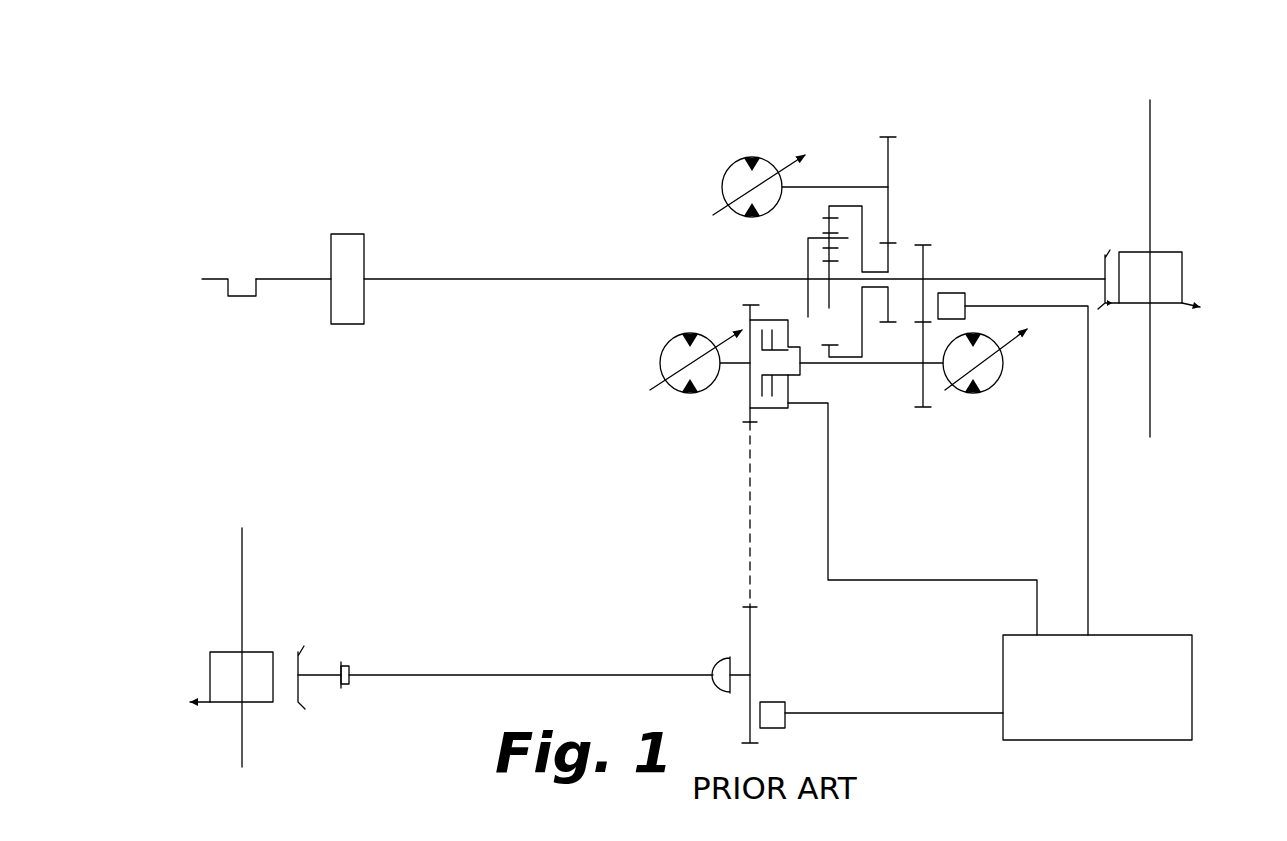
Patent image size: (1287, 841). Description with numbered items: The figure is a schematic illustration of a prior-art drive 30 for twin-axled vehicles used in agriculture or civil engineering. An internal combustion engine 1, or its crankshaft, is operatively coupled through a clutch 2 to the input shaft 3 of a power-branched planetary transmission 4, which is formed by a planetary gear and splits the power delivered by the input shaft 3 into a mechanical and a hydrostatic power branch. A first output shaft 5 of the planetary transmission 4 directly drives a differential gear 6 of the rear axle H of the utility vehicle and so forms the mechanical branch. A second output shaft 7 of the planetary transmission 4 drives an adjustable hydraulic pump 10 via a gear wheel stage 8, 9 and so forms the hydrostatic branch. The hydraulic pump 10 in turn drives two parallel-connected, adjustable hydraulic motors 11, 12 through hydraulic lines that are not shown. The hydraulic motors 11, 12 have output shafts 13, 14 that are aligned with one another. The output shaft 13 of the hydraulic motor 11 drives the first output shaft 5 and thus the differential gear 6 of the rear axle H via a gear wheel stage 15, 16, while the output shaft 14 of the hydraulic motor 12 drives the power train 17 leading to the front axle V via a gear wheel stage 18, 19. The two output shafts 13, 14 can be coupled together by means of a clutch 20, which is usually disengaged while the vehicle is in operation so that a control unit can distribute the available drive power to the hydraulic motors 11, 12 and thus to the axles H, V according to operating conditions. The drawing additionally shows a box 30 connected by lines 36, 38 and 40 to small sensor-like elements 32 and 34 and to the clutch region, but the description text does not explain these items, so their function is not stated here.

The internal combustion engine 1 is at (241, 294).
The clutch 2 is at (345, 240).
The input shaft 3 is at (486, 277).
The power-branched planetary transmission 4 is at (838, 158).
The first output shaft 5 is at (1055, 278).
The differential gear 6 is at (1163, 263).
The second output shaft 7 is at (867, 292).
The gear wheel stage 8 is at (892, 268).
The gear wheel stage 9 is at (890, 133).
The adjustable hydraulic pump 10 is at (740, 183).
The hydraulic motor 11 is at (985, 367).
The hydraulic motor 12 is at (672, 382).
The output shaft 13 is at (830, 370).
The output shaft 14 is at (735, 367).
The gear wheel stage 15 is at (928, 402).
The gear wheel stage 16 is at (930, 268).
The power train 17 is at (563, 673).
The gear wheel stage 18 is at (747, 315).
The gear wheel stage 19 is at (752, 648).
The clutch 20 is at (778, 407).
The drive 30 is at (1140, 634).
The speed sensor 32 is at (960, 292).
The speed sensor 34 is at (772, 727).
The signal line 36 is at (1089, 490).
The signal line 38 is at (897, 714).
The control line 40 is at (940, 578).
The rear axle H is at (1152, 358).
The front axle V is at (243, 557).